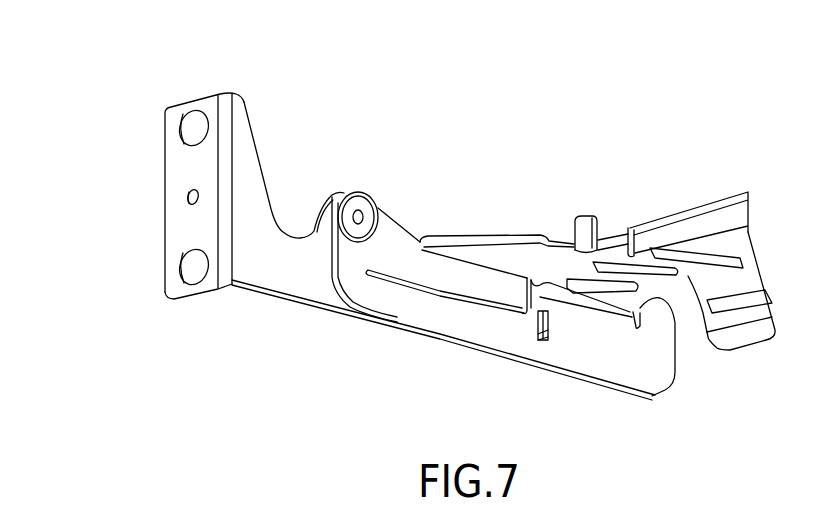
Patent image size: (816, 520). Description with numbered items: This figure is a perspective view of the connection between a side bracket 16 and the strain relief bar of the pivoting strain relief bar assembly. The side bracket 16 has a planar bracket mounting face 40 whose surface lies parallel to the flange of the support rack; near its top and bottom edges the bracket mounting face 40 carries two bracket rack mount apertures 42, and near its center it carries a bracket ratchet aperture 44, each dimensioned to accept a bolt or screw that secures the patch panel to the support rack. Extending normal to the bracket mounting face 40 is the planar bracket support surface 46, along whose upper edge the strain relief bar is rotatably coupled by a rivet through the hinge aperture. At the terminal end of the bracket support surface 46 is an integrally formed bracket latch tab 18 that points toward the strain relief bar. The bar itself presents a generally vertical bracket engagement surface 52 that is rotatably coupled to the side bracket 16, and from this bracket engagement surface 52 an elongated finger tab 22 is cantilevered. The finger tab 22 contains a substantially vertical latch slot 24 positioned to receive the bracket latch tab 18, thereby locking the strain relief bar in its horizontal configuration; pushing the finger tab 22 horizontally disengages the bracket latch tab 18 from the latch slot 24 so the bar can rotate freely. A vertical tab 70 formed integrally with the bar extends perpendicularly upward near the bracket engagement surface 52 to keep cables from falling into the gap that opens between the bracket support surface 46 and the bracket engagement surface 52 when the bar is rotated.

The side bracket 16 is at (313, 133).
The bracket latch tab 18 is at (540, 328).
The finger tab 22 is at (633, 352).
The latch slot 24 is at (550, 340).
The bracket mounting face 40 is at (183, 173).
The bracket rack mount apertures 42 is at (178, 128).
The bracket ratchet aperture 44 is at (182, 201).
The bracket support surface 46 is at (272, 258).
The bracket engagement surface 52 is at (387, 250).
The vertical tab 70 is at (583, 221).